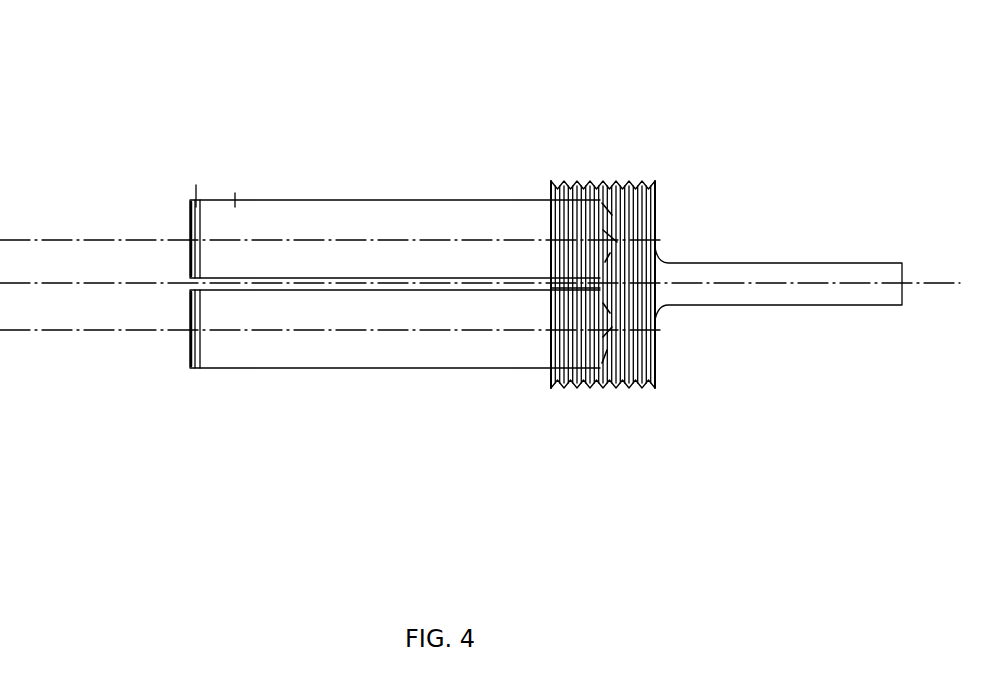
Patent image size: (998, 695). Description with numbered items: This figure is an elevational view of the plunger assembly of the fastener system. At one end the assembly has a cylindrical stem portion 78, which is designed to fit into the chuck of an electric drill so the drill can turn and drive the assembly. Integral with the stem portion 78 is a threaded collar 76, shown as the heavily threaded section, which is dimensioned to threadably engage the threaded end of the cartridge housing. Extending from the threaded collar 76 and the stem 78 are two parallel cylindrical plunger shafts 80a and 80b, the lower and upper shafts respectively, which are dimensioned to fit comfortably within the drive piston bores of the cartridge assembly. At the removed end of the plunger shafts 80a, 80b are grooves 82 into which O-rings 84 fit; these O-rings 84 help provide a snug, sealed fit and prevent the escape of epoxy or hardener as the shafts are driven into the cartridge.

The threaded collar 76 is at (628, 183).
The cylindrical stem portion 78 is at (690, 305).
The plunger shaft 80a is at (450, 368).
The plunger shaft 80b is at (485, 200).
The groove 82 is at (190, 202).
The O-ring 84 is at (195, 383).